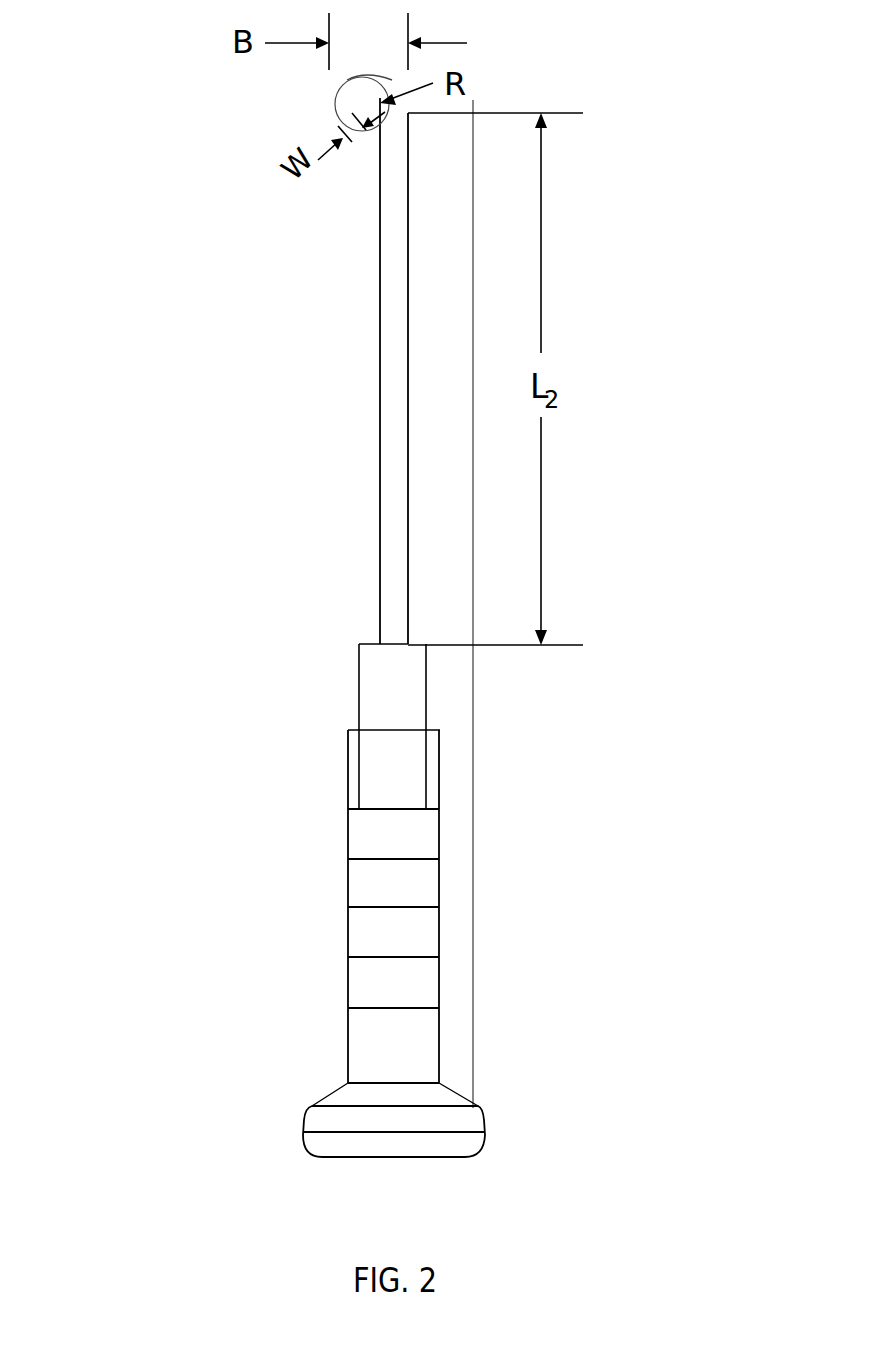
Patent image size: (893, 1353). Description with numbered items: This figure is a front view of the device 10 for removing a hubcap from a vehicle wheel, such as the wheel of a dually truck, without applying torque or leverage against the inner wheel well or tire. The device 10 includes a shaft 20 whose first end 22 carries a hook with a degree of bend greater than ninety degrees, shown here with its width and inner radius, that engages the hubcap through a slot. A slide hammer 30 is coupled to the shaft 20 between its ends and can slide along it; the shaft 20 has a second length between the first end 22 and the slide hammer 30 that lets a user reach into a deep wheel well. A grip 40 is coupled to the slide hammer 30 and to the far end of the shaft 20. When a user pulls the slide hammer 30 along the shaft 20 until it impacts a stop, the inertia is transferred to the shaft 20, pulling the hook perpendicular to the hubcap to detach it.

The device 10 is at (138, 549).
The shaft 20 is at (392, 486).
The first end 22 is at (372, 90).
The slide hammer 30 is at (408, 718).
The grip 40 is at (408, 917).